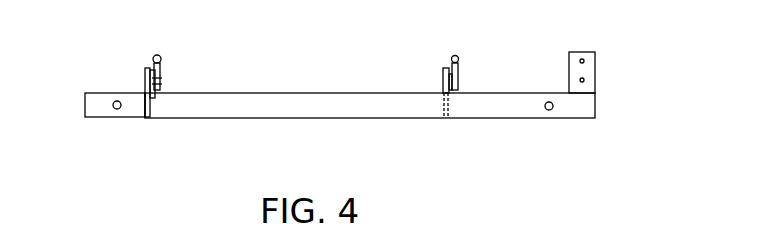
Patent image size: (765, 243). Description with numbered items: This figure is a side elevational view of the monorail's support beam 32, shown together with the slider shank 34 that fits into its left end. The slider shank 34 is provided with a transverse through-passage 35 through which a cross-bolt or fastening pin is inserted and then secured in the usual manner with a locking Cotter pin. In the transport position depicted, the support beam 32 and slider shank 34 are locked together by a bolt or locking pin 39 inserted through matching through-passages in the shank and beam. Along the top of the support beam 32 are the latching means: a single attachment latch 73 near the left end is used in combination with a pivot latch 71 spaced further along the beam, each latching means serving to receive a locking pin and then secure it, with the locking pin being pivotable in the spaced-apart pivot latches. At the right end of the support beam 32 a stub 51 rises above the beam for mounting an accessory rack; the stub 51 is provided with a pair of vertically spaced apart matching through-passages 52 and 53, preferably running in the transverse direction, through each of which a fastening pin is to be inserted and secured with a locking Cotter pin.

The support beam 32 is at (502, 120).
The slider shank 34 is at (103, 118).
The through-passage 35 is at (113, 102).
The locking pin 39 is at (553, 110).
The stub 51 is at (655, 103).
The through-passage 52 is at (585, 61).
The through-passage 53 is at (579, 80).
The pivot latch 71 is at (440, 72).
The attachment latch 73 is at (145, 73).